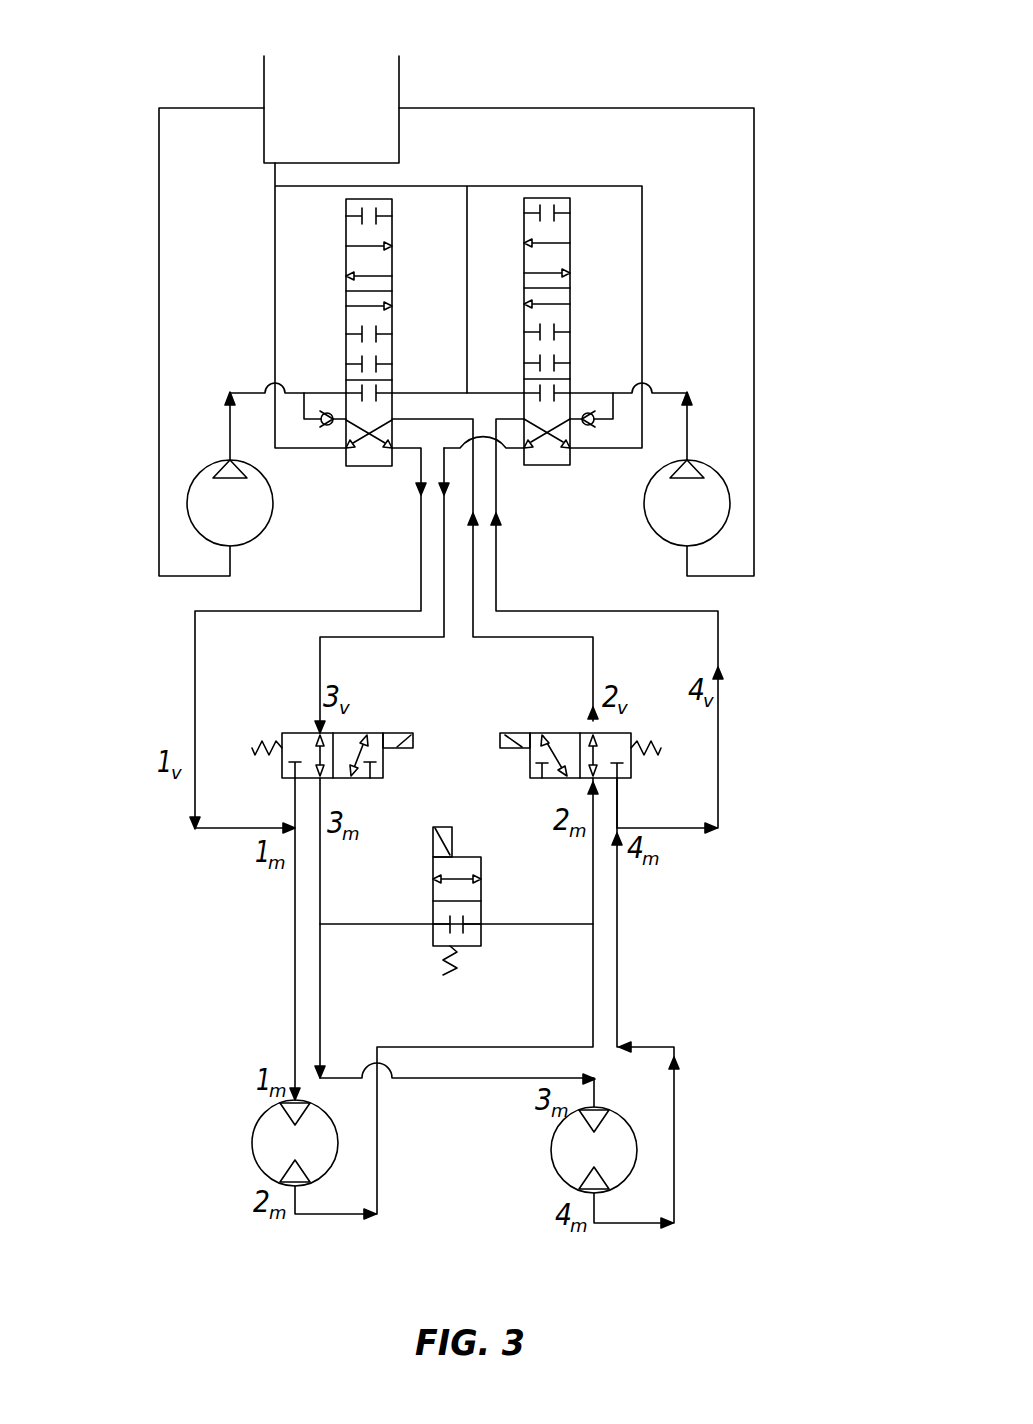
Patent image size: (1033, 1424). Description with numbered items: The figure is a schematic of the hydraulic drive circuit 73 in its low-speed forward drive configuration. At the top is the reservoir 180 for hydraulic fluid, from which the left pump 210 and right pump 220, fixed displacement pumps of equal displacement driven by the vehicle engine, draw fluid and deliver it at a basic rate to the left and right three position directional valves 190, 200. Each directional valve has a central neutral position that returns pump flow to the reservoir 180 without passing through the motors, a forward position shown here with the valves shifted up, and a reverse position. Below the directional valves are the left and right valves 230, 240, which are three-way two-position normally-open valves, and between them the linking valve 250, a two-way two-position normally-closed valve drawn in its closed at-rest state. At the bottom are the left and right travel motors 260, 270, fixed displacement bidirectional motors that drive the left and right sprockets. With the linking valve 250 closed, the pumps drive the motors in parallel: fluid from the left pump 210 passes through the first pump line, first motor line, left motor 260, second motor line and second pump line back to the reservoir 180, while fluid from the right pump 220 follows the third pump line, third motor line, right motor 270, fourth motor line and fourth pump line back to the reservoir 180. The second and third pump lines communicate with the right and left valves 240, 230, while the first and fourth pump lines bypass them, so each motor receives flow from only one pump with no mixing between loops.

The hydraulic drive circuit 73 is at (792, 40).
The reservoir 180 is at (264, 82).
The left three position directional valve 190 is at (346, 316).
The right three position directional valve 200 is at (570, 317).
The left pump 210 is at (203, 535).
The right pump 220 is at (717, 533).
The left valve 230 is at (292, 732).
The right valve 240 is at (633, 770).
The linking valve 250 is at (432, 939).
The left travel motor 260 is at (258, 1120).
The right travel motor 270 is at (636, 1172).